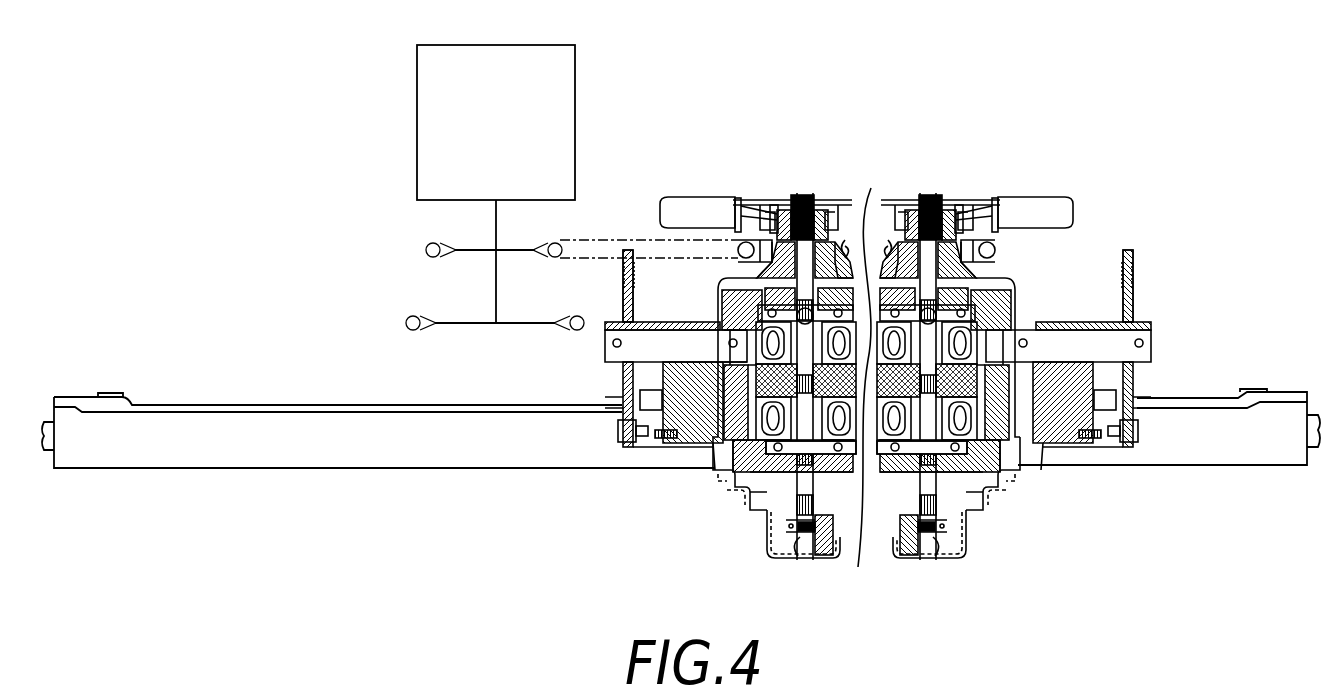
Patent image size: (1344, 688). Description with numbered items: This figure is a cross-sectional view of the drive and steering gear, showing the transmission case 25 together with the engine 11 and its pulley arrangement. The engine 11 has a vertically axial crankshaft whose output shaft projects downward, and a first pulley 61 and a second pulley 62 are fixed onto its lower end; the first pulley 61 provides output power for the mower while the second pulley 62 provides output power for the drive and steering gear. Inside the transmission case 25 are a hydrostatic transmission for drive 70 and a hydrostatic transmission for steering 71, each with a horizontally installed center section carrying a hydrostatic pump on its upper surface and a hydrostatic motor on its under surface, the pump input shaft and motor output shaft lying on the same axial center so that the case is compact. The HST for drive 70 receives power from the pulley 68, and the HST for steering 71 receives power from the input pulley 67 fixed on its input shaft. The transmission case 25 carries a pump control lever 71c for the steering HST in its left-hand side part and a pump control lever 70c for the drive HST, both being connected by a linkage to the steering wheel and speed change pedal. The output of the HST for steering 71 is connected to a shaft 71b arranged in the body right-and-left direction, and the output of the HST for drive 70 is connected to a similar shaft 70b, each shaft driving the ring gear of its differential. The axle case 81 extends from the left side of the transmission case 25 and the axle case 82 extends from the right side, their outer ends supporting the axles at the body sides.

The engine 11 is at (505, 113).
The first pulley 61 is at (476, 325).
The second pulley 62 is at (481, 252).
The transmission case 25 is at (716, 503).
The HST for steering 71 is at (703, 262).
The pump control lever 71c is at (634, 306).
The shaft 71b is at (800, 556).
The input pulley for steering 67 is at (735, 200).
The HST for drive 70 is at (1034, 266).
The pump control lever 70c is at (1134, 290).
The shaft 70b is at (932, 558).
The pulley 68 is at (990, 200).
The axle case 81 is at (232, 432).
The axle case 82 is at (1198, 418).